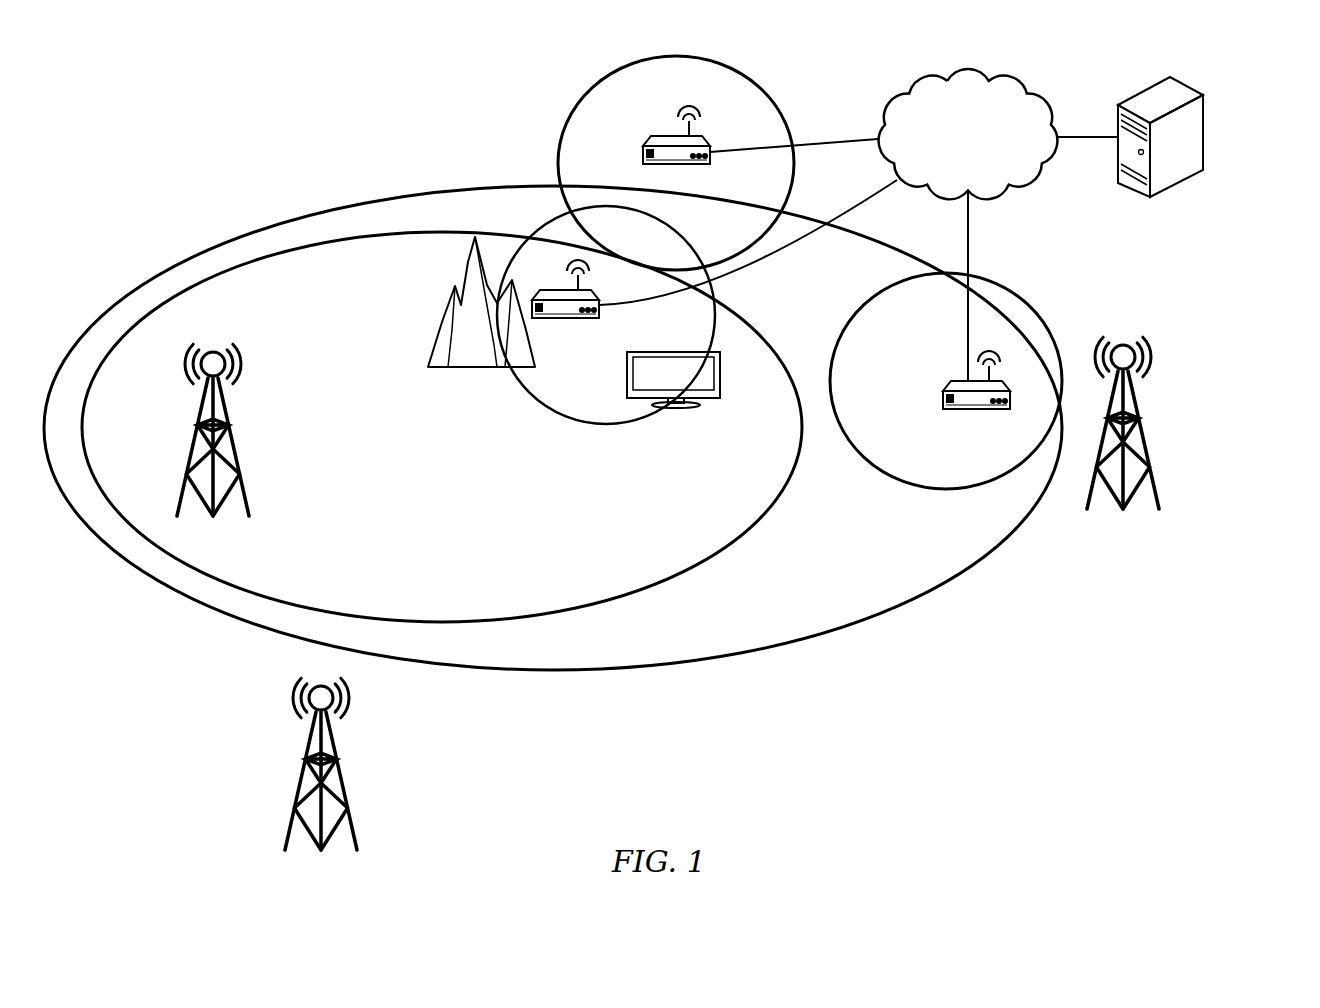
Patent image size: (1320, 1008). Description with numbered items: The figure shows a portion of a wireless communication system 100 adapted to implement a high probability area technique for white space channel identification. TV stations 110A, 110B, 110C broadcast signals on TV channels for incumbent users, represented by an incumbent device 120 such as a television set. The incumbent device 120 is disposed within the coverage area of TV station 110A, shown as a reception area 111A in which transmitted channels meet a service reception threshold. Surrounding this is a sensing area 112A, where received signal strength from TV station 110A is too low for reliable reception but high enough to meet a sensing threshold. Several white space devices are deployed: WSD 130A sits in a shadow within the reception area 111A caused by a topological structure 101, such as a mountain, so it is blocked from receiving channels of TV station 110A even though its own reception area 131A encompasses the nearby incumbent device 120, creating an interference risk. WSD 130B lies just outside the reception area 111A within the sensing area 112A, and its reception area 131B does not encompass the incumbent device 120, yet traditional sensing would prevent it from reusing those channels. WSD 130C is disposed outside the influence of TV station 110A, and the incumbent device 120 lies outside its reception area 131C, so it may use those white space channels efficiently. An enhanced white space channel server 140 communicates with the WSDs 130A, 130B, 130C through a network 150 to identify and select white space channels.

The wireless communication system 100 is at (316, 80).
The topological structure 101 is at (440, 306).
The TV station 110A is at (237, 441).
The TV station 110B is at (340, 775).
The TV station 110C is at (1147, 432).
The reception area 111A is at (653, 588).
The sensing area 112A is at (883, 612).
The incumbent device 120 is at (627, 372).
The WSD 130A is at (565, 318).
The WSD 130B is at (943, 400).
The WSD 130C is at (663, 134).
The reception area 131A is at (537, 224).
The reception area 131B is at (947, 490).
The reception area 131C is at (766, 95).
The enhanced white space channel server 140 is at (1205, 128).
The network 150 is at (955, 144).